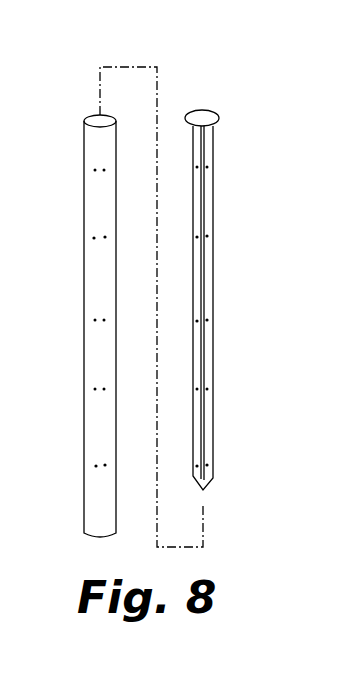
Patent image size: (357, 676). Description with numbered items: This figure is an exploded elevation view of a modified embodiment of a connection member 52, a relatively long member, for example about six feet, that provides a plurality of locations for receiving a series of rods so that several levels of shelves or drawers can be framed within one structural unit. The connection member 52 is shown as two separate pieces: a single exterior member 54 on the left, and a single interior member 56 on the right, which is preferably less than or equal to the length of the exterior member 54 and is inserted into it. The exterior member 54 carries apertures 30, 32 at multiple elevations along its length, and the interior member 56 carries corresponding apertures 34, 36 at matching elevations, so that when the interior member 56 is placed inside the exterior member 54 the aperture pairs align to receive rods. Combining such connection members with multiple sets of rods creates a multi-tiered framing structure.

The connection member 52 is at (199, 60).
The exterior member 54 is at (66, 110).
The interior member 56 is at (220, 162).
The aperture 30 is at (94, 237).
The aperture 32 is at (105, 238).
The aperture 34 is at (198, 238).
The aperture 36 is at (208, 236).